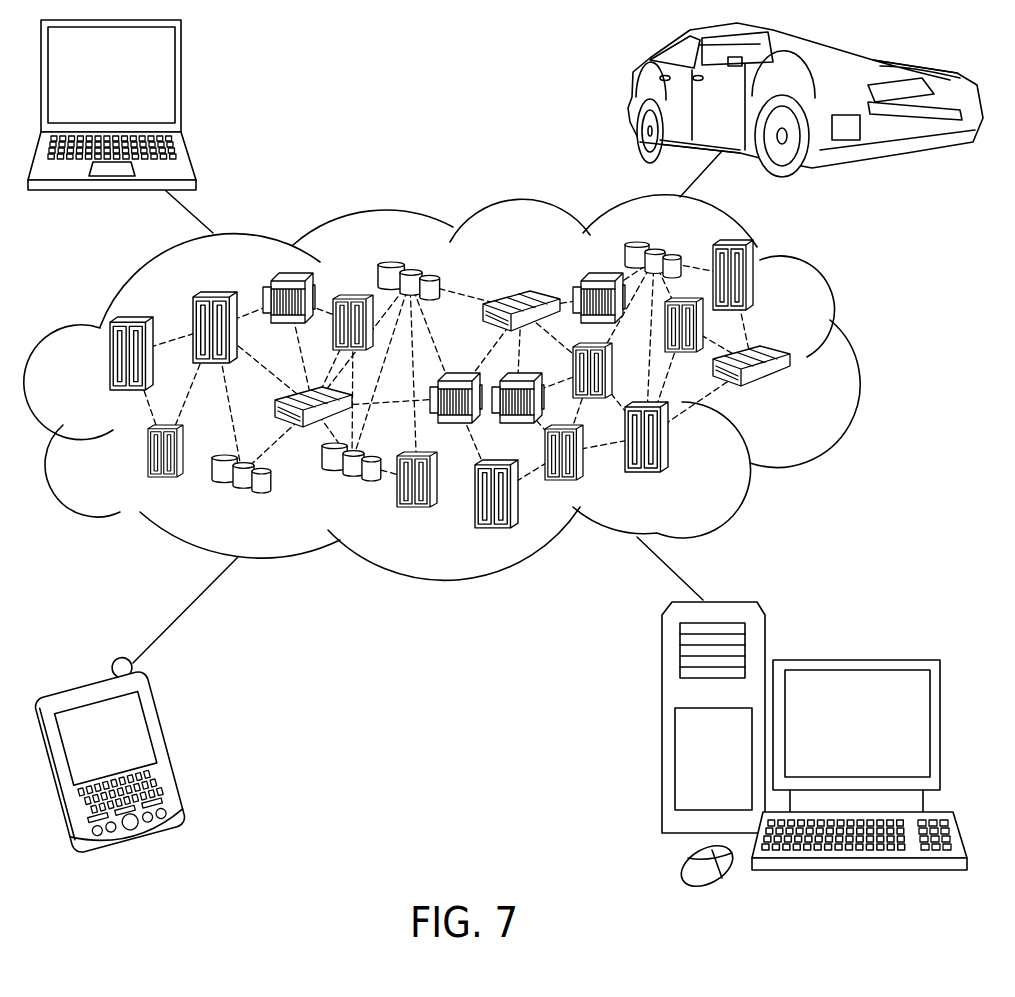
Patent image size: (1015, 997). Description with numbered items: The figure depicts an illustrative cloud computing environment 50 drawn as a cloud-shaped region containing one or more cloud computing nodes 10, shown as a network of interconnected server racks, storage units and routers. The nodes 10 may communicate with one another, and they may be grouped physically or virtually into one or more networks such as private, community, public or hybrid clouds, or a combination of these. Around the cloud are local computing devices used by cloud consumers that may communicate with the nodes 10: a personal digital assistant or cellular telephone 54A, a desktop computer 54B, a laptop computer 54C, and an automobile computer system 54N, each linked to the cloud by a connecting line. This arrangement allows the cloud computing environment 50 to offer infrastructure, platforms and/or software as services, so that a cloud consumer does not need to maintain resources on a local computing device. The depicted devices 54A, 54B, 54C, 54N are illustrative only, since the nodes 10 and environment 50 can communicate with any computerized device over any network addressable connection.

The cloud computing nodes 10 is at (800, 394).
The cloud computing environment 50 is at (857, 362).
The personal digital assistant or cellular telephone 54A is at (172, 756).
The desktop computer 54B is at (852, 657).
The laptop computer 54C is at (182, 83).
The automobile computer system 54N is at (631, 100).